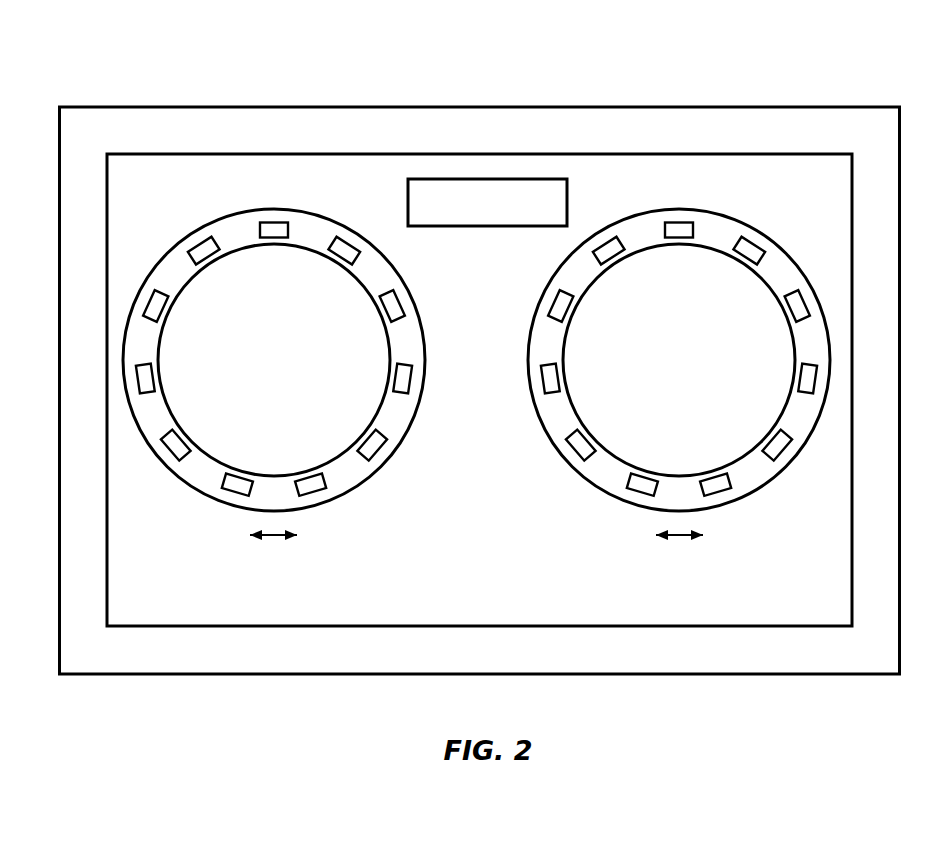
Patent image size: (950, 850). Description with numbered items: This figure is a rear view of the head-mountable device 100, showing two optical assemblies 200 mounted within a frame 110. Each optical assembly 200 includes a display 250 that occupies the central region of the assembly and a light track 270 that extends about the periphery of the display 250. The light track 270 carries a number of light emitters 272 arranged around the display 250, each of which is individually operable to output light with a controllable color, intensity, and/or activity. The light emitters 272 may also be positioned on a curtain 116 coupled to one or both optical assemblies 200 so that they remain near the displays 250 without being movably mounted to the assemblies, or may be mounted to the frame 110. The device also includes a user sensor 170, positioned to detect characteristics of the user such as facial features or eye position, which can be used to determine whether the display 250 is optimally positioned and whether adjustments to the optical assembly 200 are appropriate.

The head-mountable device 100 is at (42, 84).
The frame 110 is at (147, 122).
The curtain 116 is at (468, 430).
The user sensor 170 is at (483, 208).
The optical assembly 200 is at (382, 258).
The display 250 is at (207, 403).
The light track 270 is at (408, 340).
The light emitters 272 is at (200, 243).